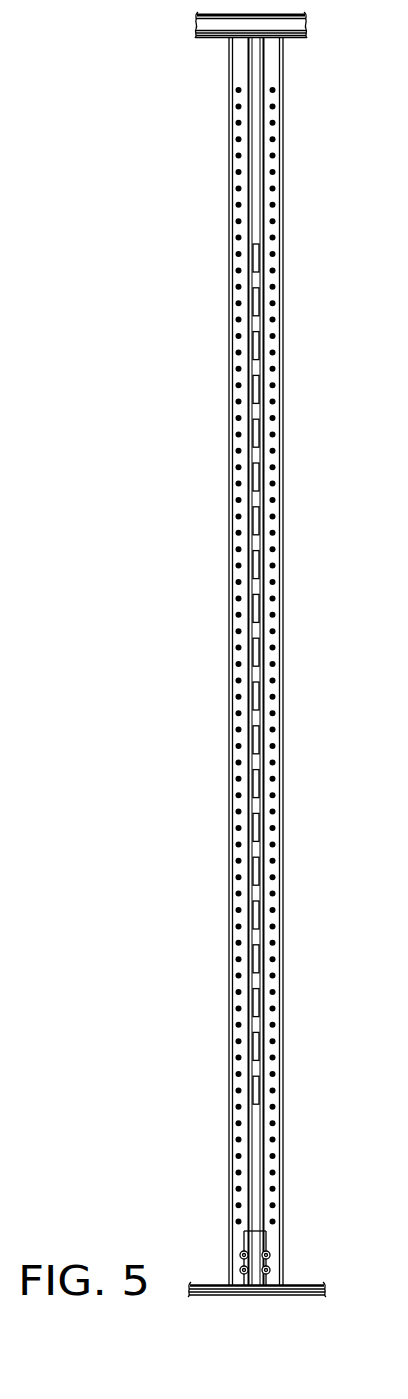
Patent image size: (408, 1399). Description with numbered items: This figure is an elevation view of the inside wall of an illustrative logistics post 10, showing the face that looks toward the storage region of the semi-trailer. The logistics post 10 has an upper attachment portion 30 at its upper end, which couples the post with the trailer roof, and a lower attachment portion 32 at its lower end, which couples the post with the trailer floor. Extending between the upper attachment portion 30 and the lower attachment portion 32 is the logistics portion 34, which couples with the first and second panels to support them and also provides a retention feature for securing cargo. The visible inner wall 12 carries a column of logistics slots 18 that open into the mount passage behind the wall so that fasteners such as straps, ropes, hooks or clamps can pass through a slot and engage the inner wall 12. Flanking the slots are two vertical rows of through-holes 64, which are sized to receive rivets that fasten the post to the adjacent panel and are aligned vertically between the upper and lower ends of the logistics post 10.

The logistics post 10 is at (176, 148).
The upper attachment portion 30 is at (277, 78).
The inner wall 12 is at (277, 211).
The logistics portion 34 is at (276, 590).
The logistics slots 18 is at (256, 490).
The through-holes 64 is at (277, 648).
The lower attachment portion 32 is at (277, 1193).